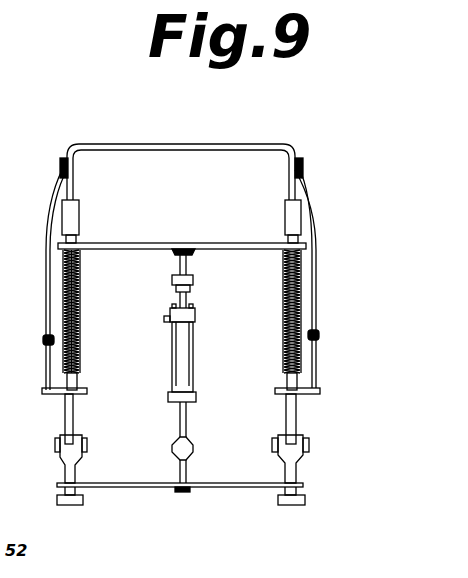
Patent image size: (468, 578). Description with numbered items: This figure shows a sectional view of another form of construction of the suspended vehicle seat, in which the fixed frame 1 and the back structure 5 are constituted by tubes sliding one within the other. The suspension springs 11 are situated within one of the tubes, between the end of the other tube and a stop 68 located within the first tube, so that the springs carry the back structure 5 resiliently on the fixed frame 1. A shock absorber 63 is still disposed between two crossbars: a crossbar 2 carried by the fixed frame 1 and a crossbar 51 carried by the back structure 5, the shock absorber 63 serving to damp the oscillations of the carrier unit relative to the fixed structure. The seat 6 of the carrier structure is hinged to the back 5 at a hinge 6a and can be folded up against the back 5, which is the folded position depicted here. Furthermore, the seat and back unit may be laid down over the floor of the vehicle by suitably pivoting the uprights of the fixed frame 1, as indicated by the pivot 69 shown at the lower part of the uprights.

The fixed frame 1 is at (70, 420).
The crossbar 2 is at (115, 483).
The back structure 5 is at (80, 325).
The seat 6 is at (156, 150).
The hinge 6a is at (322, 392).
The suspension springs 11 is at (80, 300).
The crossbar 51 is at (230, 247).
The shock absorber 63 is at (195, 372).
The stop 68 is at (80, 237).
The pivot 69 is at (62, 452).